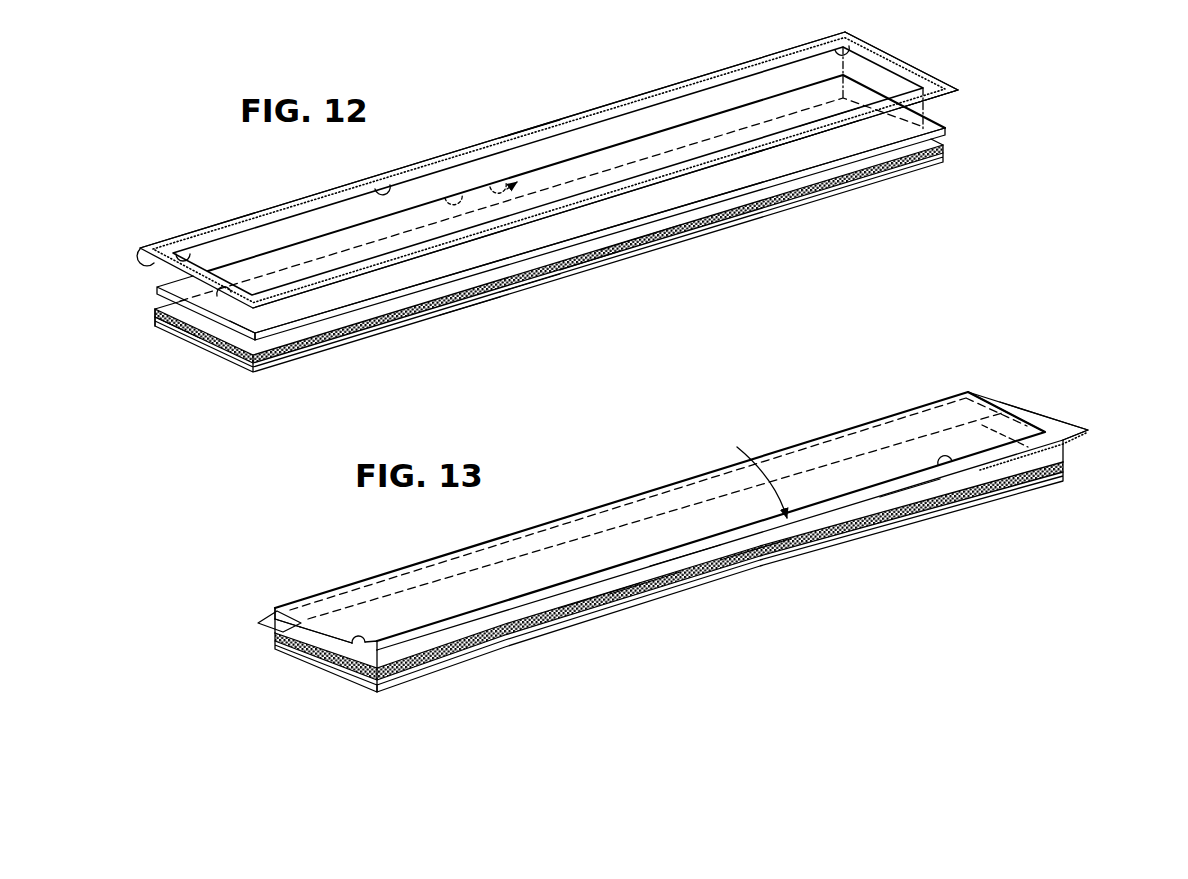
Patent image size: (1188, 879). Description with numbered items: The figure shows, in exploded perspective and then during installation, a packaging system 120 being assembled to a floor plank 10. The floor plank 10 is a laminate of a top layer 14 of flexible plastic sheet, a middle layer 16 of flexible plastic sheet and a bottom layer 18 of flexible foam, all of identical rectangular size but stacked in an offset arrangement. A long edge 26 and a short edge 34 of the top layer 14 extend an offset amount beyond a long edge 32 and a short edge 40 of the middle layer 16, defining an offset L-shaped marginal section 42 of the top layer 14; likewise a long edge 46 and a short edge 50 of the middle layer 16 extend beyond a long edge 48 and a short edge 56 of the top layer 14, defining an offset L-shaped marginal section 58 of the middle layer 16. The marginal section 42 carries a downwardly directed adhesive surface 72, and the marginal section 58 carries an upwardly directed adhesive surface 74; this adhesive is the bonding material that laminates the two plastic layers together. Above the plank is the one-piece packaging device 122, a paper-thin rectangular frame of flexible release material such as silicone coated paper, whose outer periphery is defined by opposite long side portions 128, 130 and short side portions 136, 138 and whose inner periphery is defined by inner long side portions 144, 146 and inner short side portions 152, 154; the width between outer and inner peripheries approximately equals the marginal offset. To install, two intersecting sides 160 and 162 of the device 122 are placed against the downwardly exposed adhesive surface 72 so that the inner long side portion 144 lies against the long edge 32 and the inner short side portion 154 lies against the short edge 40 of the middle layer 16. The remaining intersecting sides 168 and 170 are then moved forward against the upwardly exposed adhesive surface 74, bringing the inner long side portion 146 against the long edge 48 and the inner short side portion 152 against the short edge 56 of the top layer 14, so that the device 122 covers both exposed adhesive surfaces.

In FIG. 12, the floor plank 10 is at (711, 251).
In FIG. 13, the floor plank 10 is at (822, 573).
In FIG. 12, the top layer 14 is at (932, 115).
In FIG. 13, the top layer 14 is at (970, 389).
In FIG. 12, the middle layer 16 is at (946, 156).
In FIG. 13, the middle layer 16 is at (1069, 475).
In FIG. 12, the bottom layer 18 is at (922, 170).
In FIG. 13, the bottom layer 18 is at (1028, 497).
In FIG. 12, the long edge 26 is at (290, 242).
In FIG. 13, the long edge 26 is at (403, 567).
In FIG. 12, the long edge 32 is at (155, 311).
In FIG. 12, the short edge 34 is at (852, 73).
In FIG. 13, the short edge 34 is at (992, 401).
In FIG. 12, the short edge 40 is at (943, 145).
In FIG. 12, the L-shaped marginal section 42 is at (489, 185).
In FIG. 12, the long edge 46 is at (638, 243).
In FIG. 13, the long edge 46 is at (748, 563).
In FIG. 12, the long edge 48 is at (593, 241).
In FIG. 13, the long edge 48 is at (678, 568).
In FIG. 12, the short edge 50 is at (168, 323).
In FIG. 13, the short edge 50 is at (369, 692).
In FIG. 12, the short edge 56 is at (247, 342).
In FIG. 13, the short edge 56 is at (275, 606).
In FIG. 12, the L-shaped marginal section 58 is at (487, 282).
In FIG. 13, the L-shaped marginal section 58 is at (600, 597).
In FIG. 12, the adhesive surface 72 is at (444, 195).
In FIG. 12, the adhesive surface 74 is at (523, 285).
In FIG. 13, the adhesive surface 74 is at (642, 596).
In FIG. 12, the packaging system 120 is at (678, 64).
In FIG. 13, the packaging system 120 is at (1058, 376).
In FIG. 12, the packaging device 122 is at (640, 94).
In FIG. 13, the packaging device 122 is at (486, 601).
In FIG. 12, the long side portion 128 is at (348, 185).
In FIG. 13, the long side portion 128 is at (264, 620).
In FIG. 12, the long side portion 130 is at (799, 143).
In FIG. 13, the long side portion 130 is at (912, 481).
In FIG. 12, the short side portion 136 is at (140, 249).
In FIG. 13, the short side portion 136 is at (347, 644).
In FIG. 12, the short side portion 138 is at (908, 65).
In FIG. 13, the short side portion 138 is at (1082, 425).
In FIG. 12, the inner long side portion 144 is at (392, 186).
In FIG. 12, the inner long side portion 146 is at (823, 116).
In FIG. 13, the inner long side portion 146 is at (949, 466).
In FIG. 12, the inner short side portion 152 is at (186, 252).
In FIG. 13, the inner short side portion 152 is at (359, 644).
In FIG. 12, the inner short side portion 154 is at (823, 53).
In FIG. 12, the side 160 is at (523, 133).
In FIG. 12, the side 162 is at (884, 58).
In FIG. 12, the side 168 is at (774, 144).
In FIG. 12, the side 170 is at (222, 294).
In FIG. 13, the side 170 is at (303, 630).